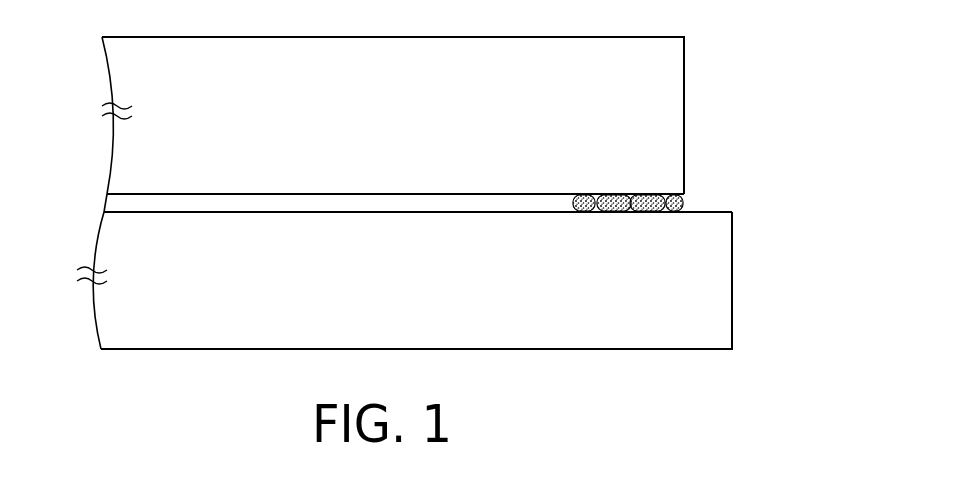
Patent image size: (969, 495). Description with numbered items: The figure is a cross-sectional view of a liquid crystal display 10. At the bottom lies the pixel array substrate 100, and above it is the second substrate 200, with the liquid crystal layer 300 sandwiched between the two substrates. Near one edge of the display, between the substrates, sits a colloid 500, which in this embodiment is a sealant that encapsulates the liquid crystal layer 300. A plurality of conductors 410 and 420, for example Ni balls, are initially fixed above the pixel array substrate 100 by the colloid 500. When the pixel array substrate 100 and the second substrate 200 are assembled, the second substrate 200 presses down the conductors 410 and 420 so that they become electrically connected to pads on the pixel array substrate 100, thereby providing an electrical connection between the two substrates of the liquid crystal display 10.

The liquid crystal display 10 is at (432, 213).
The pixel array substrate 100 is at (115, 323).
The second substrate 200 is at (118, 68).
The liquid crystal layer 300 is at (117, 197).
The conductor 410 is at (690, 176).
The conductor 420 is at (640, 205).
The colloid 500 is at (683, 204).